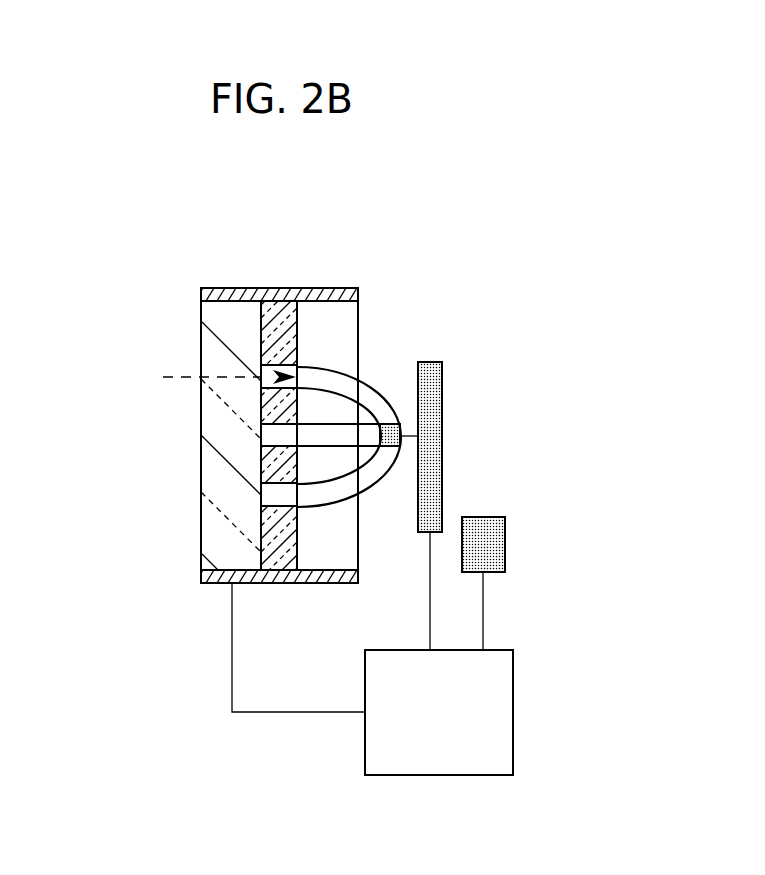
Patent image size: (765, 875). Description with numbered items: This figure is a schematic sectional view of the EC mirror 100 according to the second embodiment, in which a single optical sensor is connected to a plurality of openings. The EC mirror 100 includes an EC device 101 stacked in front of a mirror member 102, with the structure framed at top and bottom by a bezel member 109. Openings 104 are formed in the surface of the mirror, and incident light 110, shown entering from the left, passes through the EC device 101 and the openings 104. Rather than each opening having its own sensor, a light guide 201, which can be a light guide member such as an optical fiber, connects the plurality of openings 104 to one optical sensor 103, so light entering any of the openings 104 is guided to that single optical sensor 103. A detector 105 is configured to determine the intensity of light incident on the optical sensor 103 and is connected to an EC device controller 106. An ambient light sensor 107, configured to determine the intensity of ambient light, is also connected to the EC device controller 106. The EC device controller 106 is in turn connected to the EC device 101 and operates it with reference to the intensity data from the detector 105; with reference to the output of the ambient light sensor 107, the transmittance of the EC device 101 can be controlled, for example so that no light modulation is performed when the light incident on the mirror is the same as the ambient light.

The EC mirror 100 is at (437, 197).
The EC device 101 is at (223, 537).
The mirror member 102 is at (280, 300).
The optical sensor 103 is at (391, 428).
The opening 104 is at (271, 371).
The detector 105 is at (435, 400).
The EC device controller 106 is at (513, 700).
The ambient light sensor 107 is at (483, 525).
The bezel member 109 is at (240, 288).
The incident light 110 is at (165, 376).
The light guide 201 is at (366, 383).